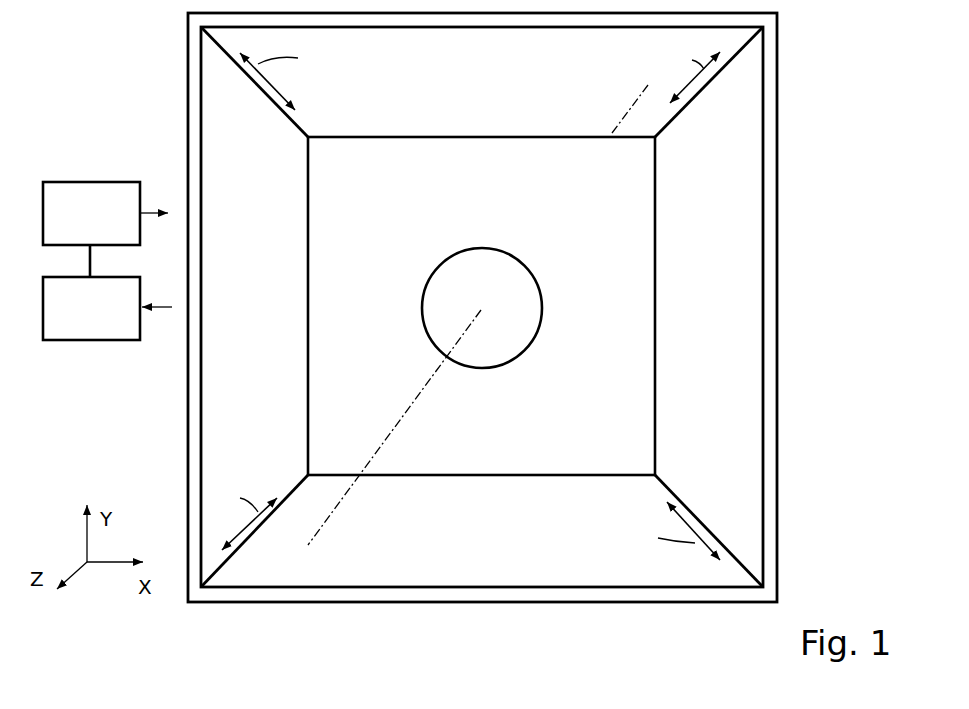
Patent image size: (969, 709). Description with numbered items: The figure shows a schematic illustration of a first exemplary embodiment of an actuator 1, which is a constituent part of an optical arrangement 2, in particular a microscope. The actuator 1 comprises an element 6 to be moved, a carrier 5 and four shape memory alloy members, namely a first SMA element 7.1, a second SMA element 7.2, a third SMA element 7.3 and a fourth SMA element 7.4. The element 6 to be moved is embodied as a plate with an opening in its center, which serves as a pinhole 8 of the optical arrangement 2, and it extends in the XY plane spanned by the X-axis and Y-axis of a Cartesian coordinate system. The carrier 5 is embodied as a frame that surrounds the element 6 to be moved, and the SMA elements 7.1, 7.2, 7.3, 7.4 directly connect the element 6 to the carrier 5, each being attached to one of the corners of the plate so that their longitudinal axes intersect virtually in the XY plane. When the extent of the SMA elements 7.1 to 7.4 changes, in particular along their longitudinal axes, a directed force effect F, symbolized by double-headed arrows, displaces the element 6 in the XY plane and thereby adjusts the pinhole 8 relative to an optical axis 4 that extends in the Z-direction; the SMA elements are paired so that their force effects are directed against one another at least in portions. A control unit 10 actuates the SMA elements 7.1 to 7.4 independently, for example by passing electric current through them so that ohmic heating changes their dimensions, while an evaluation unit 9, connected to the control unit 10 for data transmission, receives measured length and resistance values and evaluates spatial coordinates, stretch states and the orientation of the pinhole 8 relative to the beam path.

The actuator 1 is at (186, 135).
The optical arrangement 2 is at (131, 106).
The optical axis 4 is at (622, 120).
The carrier 5 is at (186, 408).
The element to be moved 6 is at (307, 370).
The first SMA element 7.1 is at (268, 95).
The second SMA element 7.2 is at (708, 88).
The third SMA element 7.3 is at (700, 512).
The fourth SMA element 7.4 is at (297, 480).
The pinhole 8 is at (467, 293).
The evaluation unit 9 is at (107, 308).
The control unit 10 is at (105, 229).